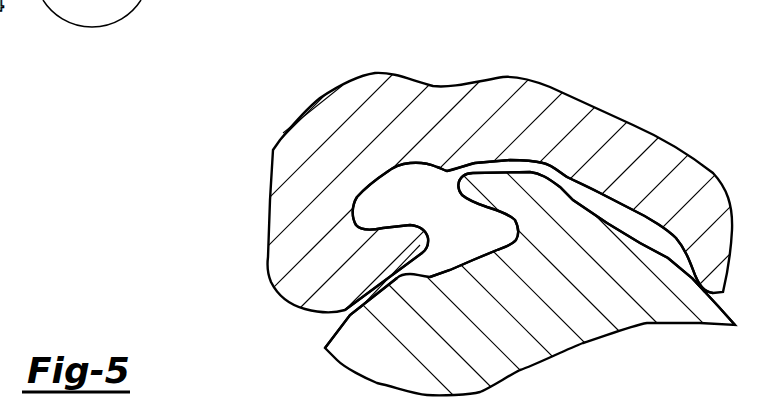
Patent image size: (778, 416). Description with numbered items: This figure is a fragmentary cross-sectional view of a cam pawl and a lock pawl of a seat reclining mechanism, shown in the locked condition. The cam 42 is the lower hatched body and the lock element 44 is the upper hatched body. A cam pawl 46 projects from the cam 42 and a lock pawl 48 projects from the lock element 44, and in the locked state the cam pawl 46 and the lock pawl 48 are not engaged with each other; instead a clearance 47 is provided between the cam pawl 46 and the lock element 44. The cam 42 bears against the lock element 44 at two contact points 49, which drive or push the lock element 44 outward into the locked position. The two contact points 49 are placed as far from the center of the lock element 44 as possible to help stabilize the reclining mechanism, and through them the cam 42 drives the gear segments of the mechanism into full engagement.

The cam 42 is at (503, 310).
The lock element 44 is at (405, 98).
The cam pawl 46 is at (481, 188).
The clearance 47 is at (491, 168).
The lock pawl 48 is at (408, 242).
The contact points 49 is at (371, 300).